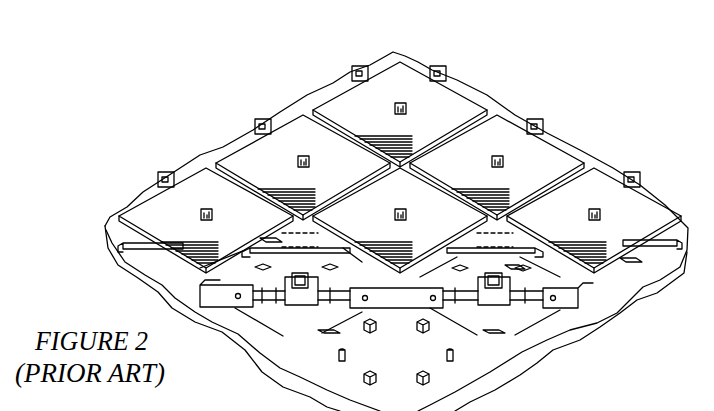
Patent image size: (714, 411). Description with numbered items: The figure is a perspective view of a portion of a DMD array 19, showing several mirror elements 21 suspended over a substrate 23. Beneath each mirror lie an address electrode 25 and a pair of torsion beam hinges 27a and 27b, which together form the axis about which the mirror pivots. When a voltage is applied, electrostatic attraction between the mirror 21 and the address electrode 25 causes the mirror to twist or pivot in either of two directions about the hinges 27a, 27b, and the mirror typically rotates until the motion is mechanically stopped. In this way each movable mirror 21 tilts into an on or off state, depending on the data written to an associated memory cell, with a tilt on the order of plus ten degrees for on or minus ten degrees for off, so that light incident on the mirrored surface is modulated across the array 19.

The DMD array 19 is at (544, 97).
The mirror element 21 is at (392, 95).
The substrate 23 is at (536, 352).
The address electrode 25 is at (265, 240).
The torsion beam hinge 27a is at (242, 275).
The torsion beam hinge 27b is at (365, 265).